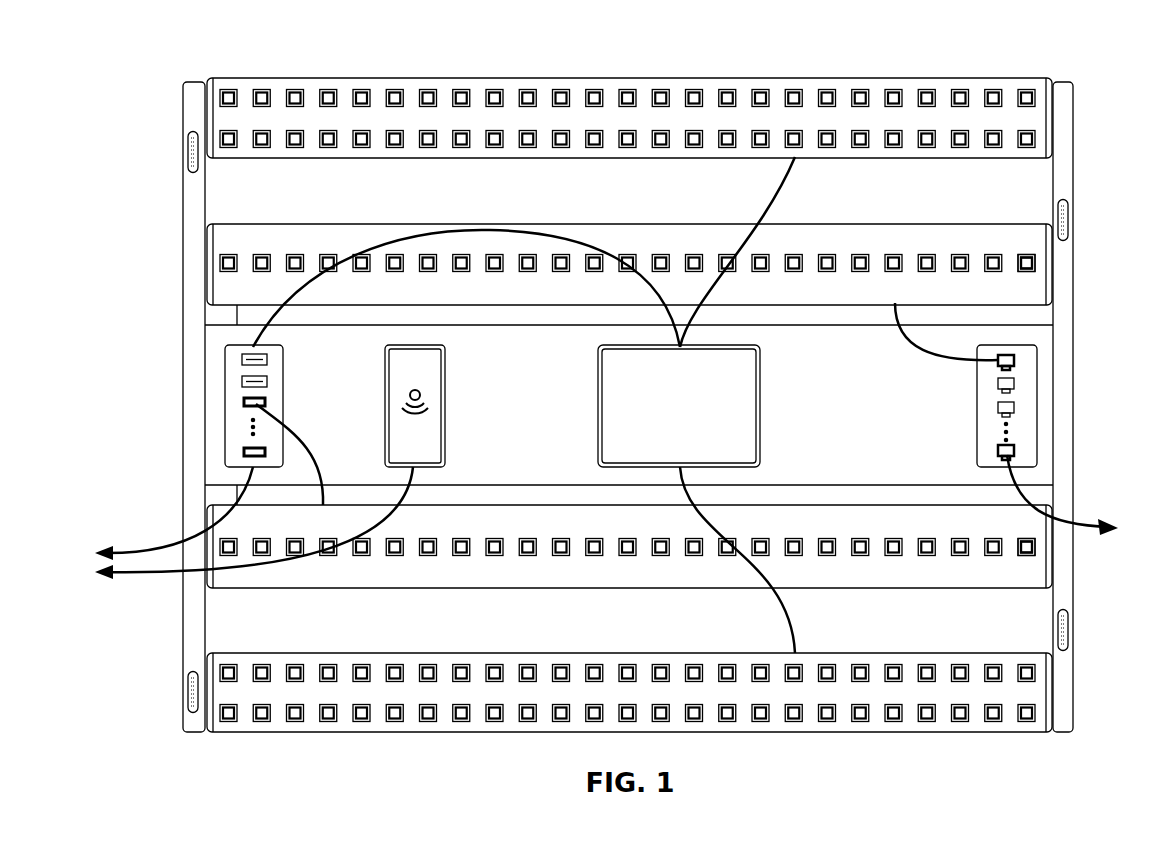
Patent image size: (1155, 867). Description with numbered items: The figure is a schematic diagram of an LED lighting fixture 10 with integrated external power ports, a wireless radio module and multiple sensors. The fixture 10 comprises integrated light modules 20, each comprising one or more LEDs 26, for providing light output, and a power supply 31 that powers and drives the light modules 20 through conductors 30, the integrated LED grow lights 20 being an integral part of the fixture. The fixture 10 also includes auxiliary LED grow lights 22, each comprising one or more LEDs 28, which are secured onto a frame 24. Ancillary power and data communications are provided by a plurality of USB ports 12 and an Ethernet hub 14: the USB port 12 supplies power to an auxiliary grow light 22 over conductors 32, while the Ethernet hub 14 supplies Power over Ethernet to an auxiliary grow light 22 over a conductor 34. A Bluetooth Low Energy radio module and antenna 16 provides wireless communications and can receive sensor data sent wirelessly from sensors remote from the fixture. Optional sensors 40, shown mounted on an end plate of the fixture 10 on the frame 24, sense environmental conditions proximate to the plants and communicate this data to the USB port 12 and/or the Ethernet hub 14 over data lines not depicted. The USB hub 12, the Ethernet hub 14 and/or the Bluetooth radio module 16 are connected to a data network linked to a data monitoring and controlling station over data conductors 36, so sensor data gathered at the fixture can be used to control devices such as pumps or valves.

The LED fixture 10 is at (135, 82).
The USB port 12 is at (285, 400).
The Ethernet hub 14 is at (975, 437).
The Bluetooth Low Energy radio module and antenna 16 is at (448, 400).
The integrated light module 20 is at (977, 80).
The auxiliary LED grow light 22 is at (983, 240).
The frame 24 is at (183, 378).
The LED 26 is at (628, 84).
The LED 28 is at (1037, 263).
The conductor 30 is at (543, 232).
The power supply 31 is at (762, 408).
The conductor 32 is at (313, 466).
The conductor 34 is at (915, 352).
The data conductor 36 is at (152, 555).
The sensor 40 is at (188, 150).